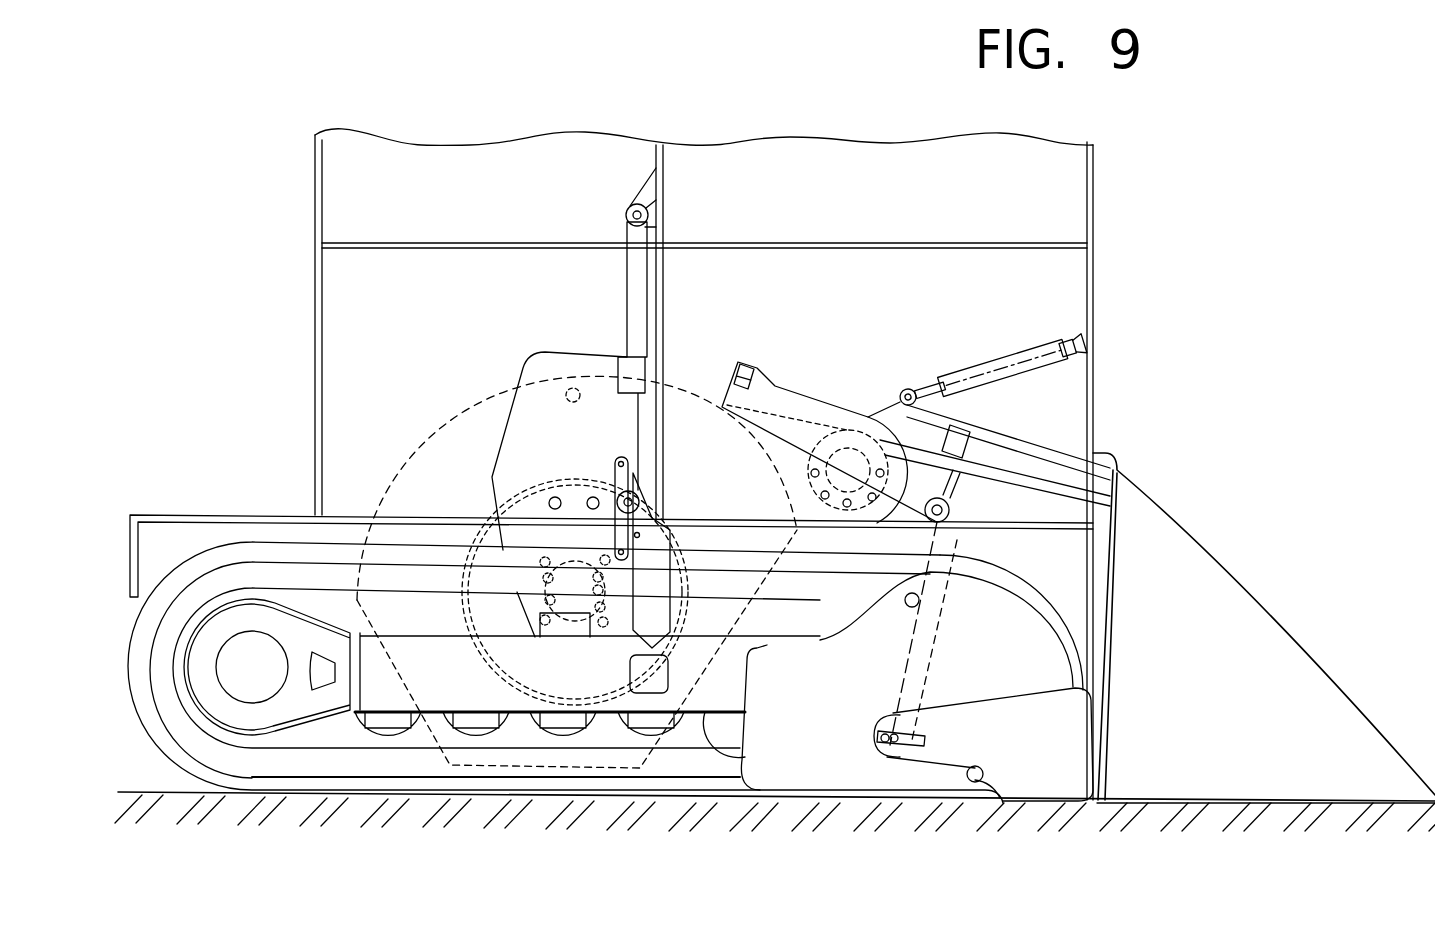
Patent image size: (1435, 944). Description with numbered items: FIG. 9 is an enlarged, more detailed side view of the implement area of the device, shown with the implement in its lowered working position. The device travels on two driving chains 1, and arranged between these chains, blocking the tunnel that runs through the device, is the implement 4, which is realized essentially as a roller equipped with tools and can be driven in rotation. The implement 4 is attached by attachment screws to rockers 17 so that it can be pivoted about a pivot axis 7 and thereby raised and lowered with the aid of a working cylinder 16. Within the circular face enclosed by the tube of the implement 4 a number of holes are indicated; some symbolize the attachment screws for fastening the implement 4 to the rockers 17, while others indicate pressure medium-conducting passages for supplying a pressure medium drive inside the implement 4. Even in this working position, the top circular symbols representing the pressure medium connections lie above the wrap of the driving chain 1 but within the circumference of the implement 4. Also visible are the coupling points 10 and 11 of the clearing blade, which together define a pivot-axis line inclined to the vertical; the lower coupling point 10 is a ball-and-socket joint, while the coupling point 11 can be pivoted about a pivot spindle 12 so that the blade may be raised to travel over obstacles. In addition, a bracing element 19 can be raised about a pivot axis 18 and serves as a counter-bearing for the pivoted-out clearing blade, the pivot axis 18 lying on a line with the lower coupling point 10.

The driving chain 1 is at (375, 783).
The implement 4 is at (487, 523).
The pivot axis 7 is at (852, 470).
The coupling point 10 is at (878, 735).
The coupling point 11 is at (977, 442).
The pivot spindle 12 is at (950, 508).
The working cylinder 16 is at (632, 263).
The rocker 17 is at (438, 443).
The pivot axis 18 is at (885, 752).
The bracing element 19 is at (1042, 757).